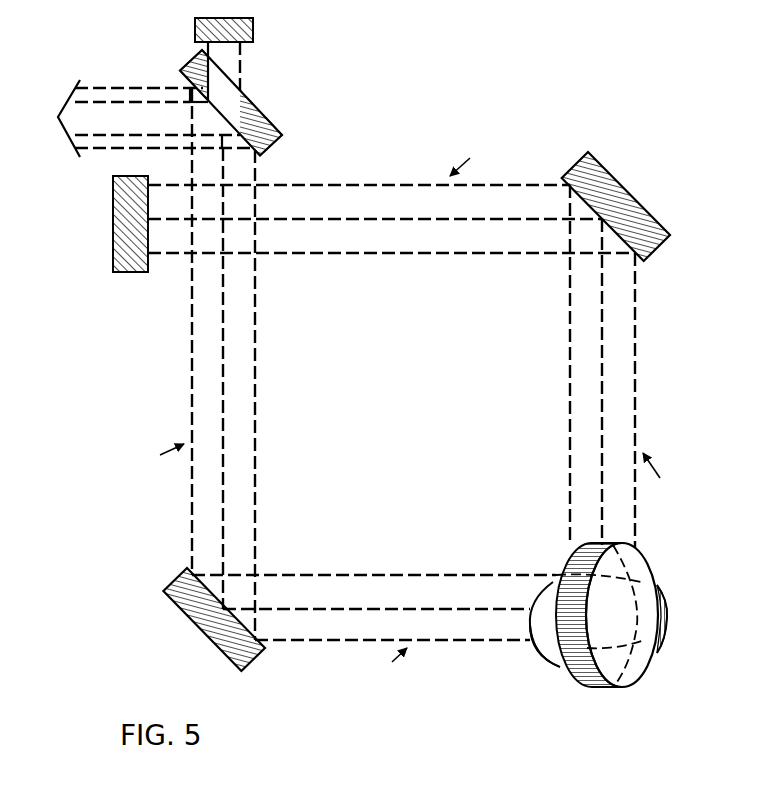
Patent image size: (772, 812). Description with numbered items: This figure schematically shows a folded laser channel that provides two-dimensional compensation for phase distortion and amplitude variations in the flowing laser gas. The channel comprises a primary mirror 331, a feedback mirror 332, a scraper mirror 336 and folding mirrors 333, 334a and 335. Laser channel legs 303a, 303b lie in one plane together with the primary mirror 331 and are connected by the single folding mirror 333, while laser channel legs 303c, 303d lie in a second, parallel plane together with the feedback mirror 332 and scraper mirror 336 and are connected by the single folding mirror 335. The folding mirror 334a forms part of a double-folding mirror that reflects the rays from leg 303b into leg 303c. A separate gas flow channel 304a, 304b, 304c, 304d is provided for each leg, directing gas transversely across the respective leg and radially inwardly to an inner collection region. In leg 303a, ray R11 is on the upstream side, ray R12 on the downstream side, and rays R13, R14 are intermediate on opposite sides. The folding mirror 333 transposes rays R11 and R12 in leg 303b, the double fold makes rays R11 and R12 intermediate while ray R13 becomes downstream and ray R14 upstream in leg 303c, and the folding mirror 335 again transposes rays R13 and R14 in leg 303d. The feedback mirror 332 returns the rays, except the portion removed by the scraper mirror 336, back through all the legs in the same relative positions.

The primary mirror 331 is at (113, 244).
The feedback mirror 332 is at (195, 21).
The folding mirror 333 is at (638, 209).
The folding mirror 334a is at (655, 573).
The folding mirror 335 is at (207, 638).
The scraper mirror 336 is at (255, 103).
The laser channel leg 303a is at (380, 301).
The laser channel leg 303b is at (565, 469).
The laser channel leg 303c is at (384, 545).
The laser channel leg 303d is at (330, 390).
The gas flow channel 304a is at (482, 155).
The gas flow channel 304b is at (671, 475).
The gas flow channel 304c is at (373, 660).
The gas flow channel 304d is at (157, 463).
The ray R11 is at (380, 186).
The ray R12 is at (438, 247).
The ray R13 is at (470, 215).
The ray R14 is at (270, 433).